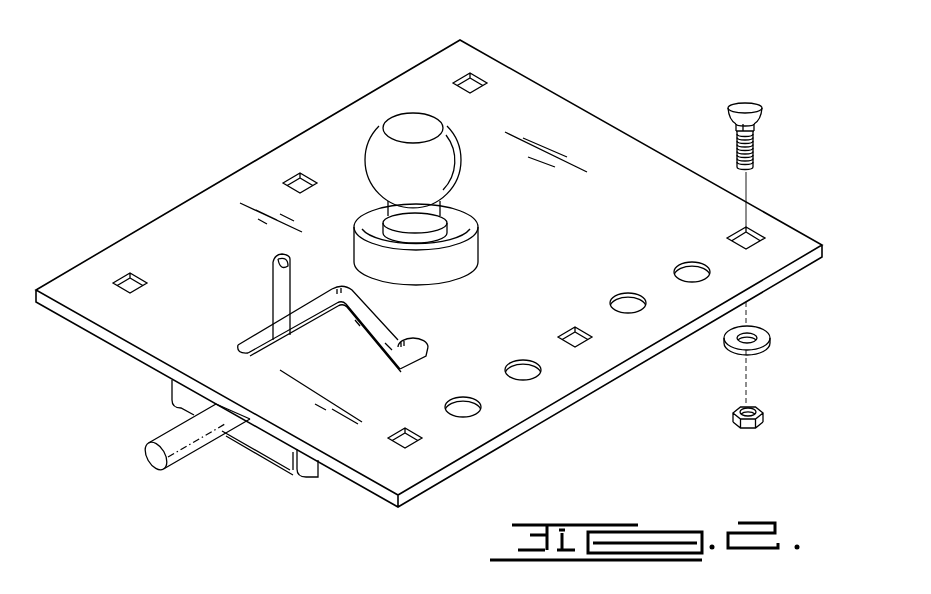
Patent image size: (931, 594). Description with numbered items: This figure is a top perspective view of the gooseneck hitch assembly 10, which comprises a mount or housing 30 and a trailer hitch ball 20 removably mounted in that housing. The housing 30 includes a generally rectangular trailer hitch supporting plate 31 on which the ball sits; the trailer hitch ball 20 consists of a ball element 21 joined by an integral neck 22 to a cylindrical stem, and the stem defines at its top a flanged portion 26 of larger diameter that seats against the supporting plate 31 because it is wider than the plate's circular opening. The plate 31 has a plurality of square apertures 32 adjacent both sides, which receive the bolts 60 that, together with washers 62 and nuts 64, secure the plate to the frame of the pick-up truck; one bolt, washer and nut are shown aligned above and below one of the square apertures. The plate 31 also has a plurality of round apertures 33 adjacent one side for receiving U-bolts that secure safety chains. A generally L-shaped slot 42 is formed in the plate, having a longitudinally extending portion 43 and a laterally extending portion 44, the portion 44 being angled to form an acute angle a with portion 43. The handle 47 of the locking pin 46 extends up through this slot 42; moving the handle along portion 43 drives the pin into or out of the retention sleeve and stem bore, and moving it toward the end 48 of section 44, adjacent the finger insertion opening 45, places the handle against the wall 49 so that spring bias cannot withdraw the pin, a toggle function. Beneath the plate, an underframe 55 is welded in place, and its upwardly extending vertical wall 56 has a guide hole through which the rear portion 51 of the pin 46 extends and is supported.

The gooseneck hitch assembly 10 is at (584, 91).
The trailer hitch ball 20 is at (383, 123).
The ball element 21 is at (372, 152).
The neck 22 is at (420, 218).
The flanged portion 26 is at (478, 252).
The housing 30 is at (366, 492).
The trailer hitch supporting plate 31 is at (128, 312).
The square apertures 32 is at (473, 80).
The round apertures 33 is at (628, 298).
The slot 42 is at (363, 285).
The longitudinally extending portion 43 is at (308, 314).
The laterally extending portion 44 is at (367, 320).
The finger insertion opening 45 is at (430, 345).
The locking pin 46 is at (218, 424).
The handle 47 is at (278, 294).
The end of section 44 48 is at (416, 366).
The wall of section 44 49 is at (382, 343).
The acute angle a is at (357, 321).
The rear portion of pin 51 is at (150, 457).
The underframe 55 is at (308, 478).
The vertical wall 56 is at (267, 443).
The bolts 60 is at (757, 147).
The washers 62 is at (763, 350).
The nuts 64 is at (740, 430).